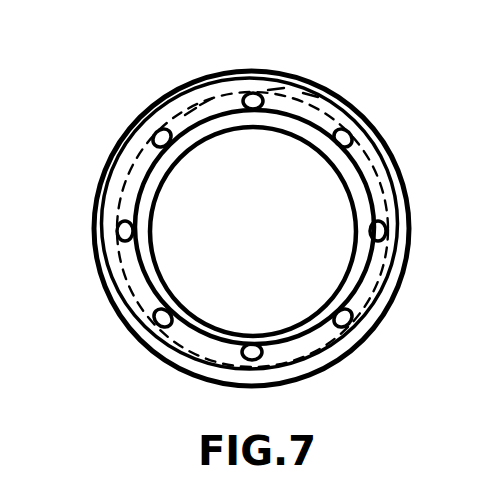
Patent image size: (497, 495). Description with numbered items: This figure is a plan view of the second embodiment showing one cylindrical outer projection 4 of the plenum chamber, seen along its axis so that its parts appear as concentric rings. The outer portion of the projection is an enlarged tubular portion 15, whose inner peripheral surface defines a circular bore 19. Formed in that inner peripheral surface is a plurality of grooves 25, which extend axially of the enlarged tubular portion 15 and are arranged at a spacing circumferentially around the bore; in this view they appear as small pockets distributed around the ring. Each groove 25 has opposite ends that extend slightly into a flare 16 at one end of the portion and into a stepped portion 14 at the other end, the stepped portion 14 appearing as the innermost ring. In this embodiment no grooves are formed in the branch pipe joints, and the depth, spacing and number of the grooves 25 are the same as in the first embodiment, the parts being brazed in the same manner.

The cylindrical outer projection 4 is at (255, 201).
The stepped portion 14 is at (218, 131).
The enlarged tubular portion 15 is at (392, 290).
The flare 16 is at (118, 175).
The circular bore 19 is at (322, 98).
The grooves 25 is at (256, 96).